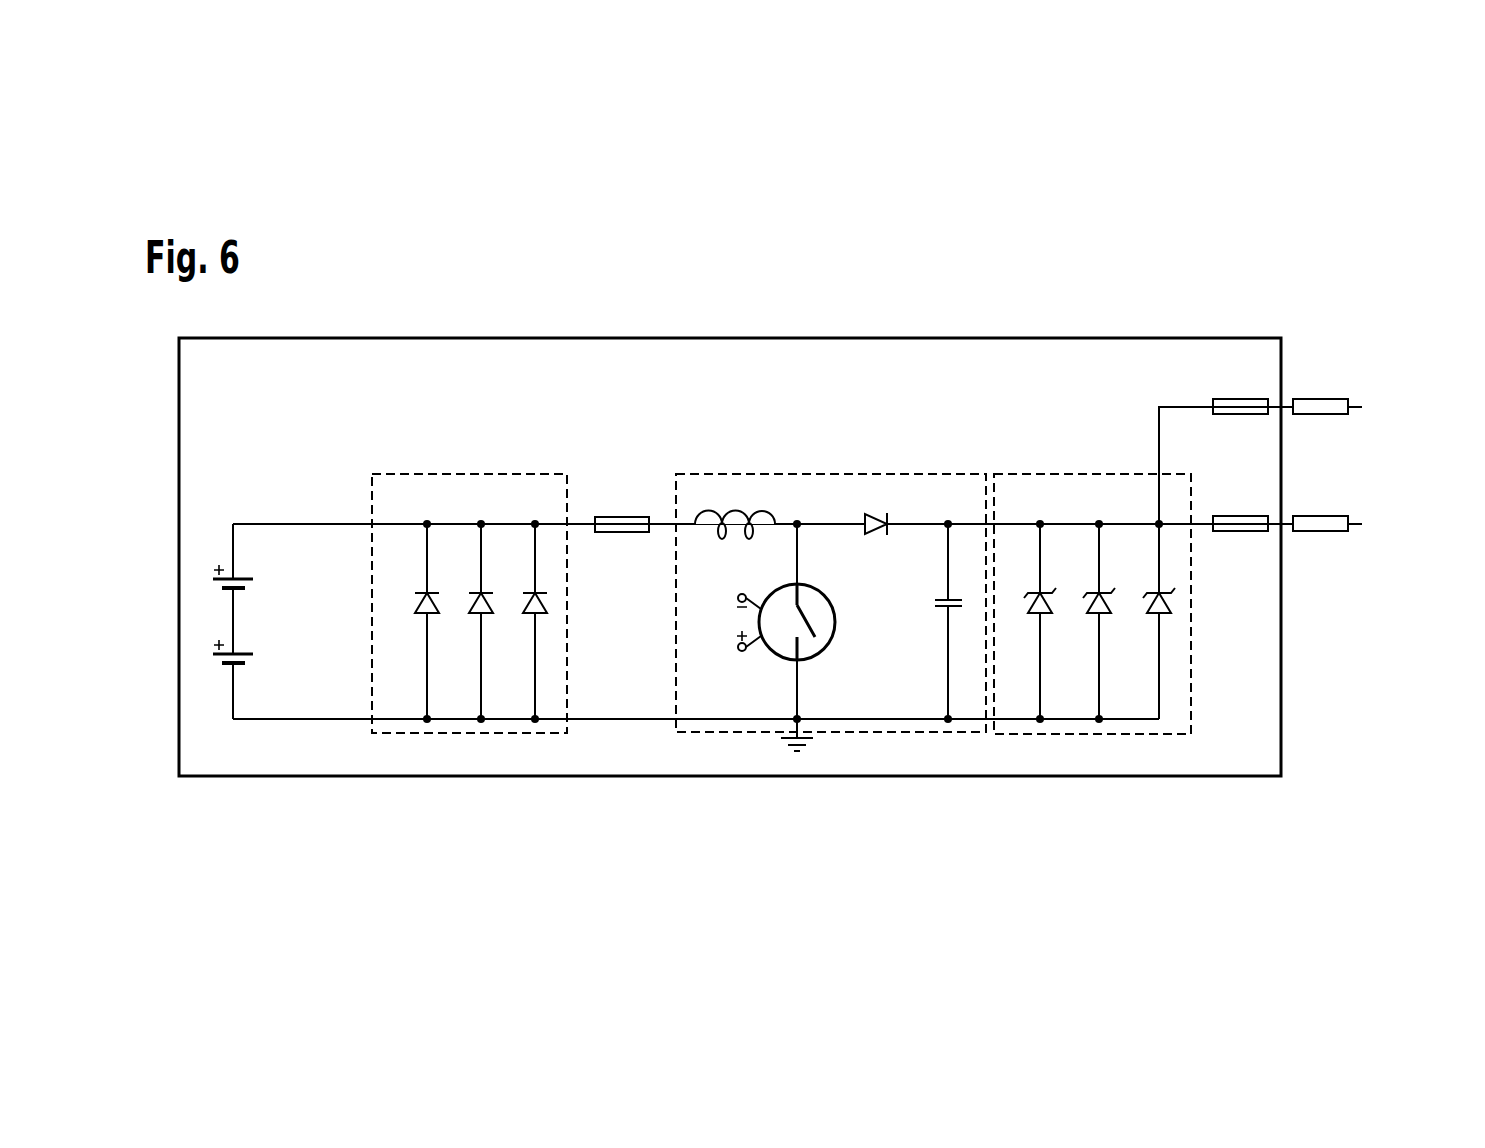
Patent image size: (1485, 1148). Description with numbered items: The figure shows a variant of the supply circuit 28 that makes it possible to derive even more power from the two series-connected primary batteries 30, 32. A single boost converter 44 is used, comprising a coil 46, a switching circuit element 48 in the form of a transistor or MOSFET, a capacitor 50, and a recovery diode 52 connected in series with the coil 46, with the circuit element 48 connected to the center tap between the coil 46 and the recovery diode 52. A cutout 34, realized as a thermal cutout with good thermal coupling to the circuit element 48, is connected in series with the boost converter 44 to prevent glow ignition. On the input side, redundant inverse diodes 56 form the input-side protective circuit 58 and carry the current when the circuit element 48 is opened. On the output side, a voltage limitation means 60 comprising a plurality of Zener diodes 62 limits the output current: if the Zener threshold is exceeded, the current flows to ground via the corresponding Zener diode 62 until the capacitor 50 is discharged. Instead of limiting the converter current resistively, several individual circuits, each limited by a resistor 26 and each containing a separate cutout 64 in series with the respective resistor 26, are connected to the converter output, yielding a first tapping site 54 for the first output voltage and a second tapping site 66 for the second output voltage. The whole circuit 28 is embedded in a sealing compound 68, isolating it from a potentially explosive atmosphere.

The current-limiting resistor 26 is at (1297, 396).
The supply circuit 28 is at (378, 314).
The battery 30 is at (214, 586).
The battery 32 is at (214, 661).
The cutout 34 is at (622, 533).
The boost converter 44 is at (875, 733).
The coil 46 is at (708, 508).
The circuit element 48 is at (781, 659).
The capacitor 50 is at (935, 602).
The recovery diode 52 is at (897, 514).
The first tapping site 54 is at (1358, 400).
The inverse diode 56 is at (415, 598).
The input-side protective circuit 58 is at (460, 733).
The voltage limitation means 60 is at (1110, 733).
The Zener diode 62 is at (1172, 604).
The cutout 64 is at (1222, 398).
The second tapping site 66 is at (1356, 528).
The sealing compound 68 is at (818, 338).